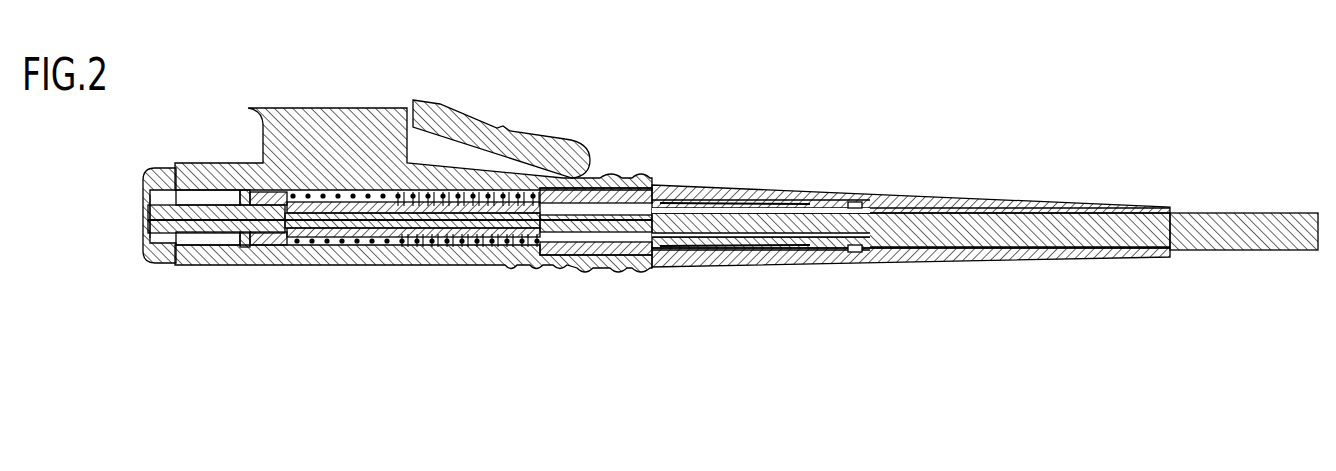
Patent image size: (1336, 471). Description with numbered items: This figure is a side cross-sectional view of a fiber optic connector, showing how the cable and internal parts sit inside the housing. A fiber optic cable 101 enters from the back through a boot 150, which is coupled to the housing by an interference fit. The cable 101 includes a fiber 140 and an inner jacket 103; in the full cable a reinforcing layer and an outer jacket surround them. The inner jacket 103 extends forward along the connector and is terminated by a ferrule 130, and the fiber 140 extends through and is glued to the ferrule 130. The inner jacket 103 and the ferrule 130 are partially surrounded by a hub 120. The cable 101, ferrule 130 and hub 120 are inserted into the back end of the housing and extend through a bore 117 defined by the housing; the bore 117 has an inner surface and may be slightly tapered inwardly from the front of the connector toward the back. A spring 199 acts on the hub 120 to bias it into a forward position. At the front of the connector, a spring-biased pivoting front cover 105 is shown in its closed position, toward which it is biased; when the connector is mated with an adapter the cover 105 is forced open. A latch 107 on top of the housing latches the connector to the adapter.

The fiber optic cable 101 is at (1102, 227).
The inner jacket 103 is at (748, 225).
The front cover 105 is at (145, 178).
The latch 107 is at (523, 135).
The bore 117 is at (192, 197).
The hub 120 is at (268, 240).
The ferrule 130 is at (195, 227).
The fiber 140 is at (213, 225).
The boot 150 is at (882, 265).
The spring 199 is at (422, 237).